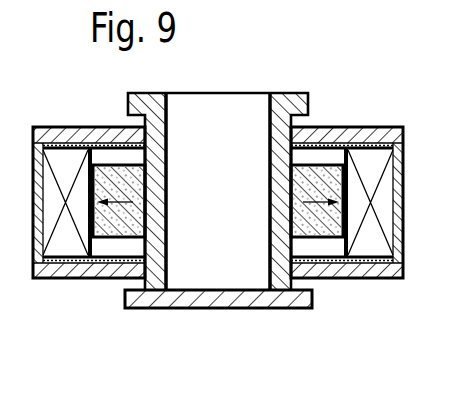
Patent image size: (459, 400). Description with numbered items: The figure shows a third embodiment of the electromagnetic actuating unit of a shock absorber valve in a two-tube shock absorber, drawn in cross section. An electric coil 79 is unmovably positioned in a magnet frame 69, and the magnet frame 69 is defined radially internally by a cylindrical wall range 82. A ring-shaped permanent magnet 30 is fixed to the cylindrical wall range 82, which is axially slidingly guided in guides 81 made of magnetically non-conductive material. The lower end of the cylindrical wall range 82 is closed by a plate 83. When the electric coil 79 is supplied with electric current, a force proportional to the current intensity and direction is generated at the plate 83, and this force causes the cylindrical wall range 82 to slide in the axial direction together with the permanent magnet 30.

The permanent magnet 30 is at (117, 173).
The magnet frame 69 is at (67, 278).
The electric coil 79 is at (62, 170).
The guides 81 is at (295, 118).
The cylindrical wall range 82 is at (275, 140).
The plate 83 is at (155, 298).